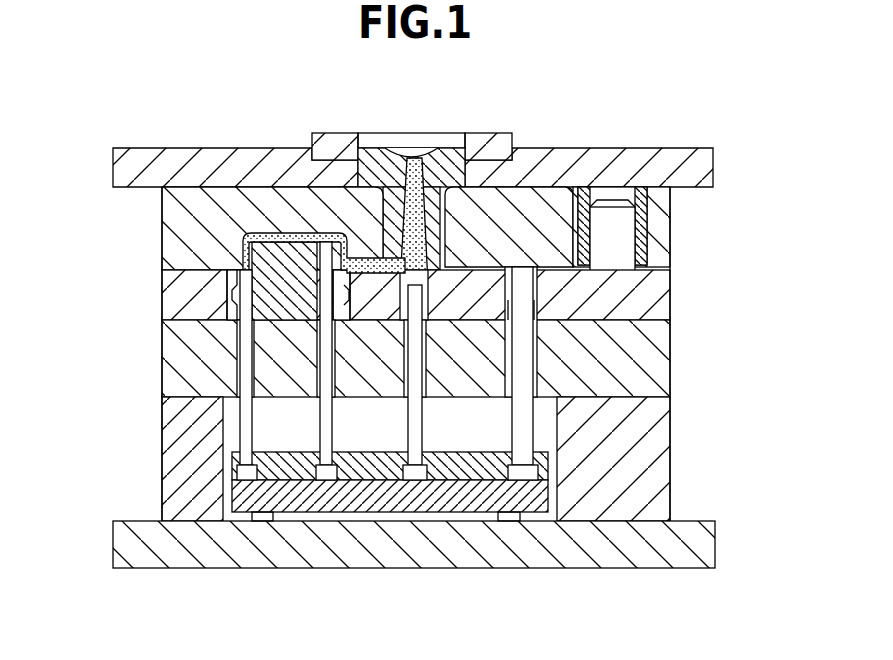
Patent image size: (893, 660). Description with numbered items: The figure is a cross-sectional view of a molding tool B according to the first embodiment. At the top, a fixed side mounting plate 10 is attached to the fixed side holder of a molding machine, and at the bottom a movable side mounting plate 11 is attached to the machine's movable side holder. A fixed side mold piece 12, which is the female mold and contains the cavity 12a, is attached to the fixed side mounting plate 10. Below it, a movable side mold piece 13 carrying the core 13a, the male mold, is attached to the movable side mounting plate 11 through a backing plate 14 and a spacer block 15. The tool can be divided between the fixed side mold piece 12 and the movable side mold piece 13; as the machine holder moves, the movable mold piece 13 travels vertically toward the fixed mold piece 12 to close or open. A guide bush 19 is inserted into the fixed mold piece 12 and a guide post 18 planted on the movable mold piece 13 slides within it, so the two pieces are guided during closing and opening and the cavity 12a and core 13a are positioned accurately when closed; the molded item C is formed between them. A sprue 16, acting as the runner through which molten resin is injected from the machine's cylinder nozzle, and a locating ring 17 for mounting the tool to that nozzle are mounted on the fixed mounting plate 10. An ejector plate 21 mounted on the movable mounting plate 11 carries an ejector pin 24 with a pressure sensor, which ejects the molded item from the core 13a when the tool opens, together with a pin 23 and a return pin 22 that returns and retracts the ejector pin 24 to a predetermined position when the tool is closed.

The fixed side mounting plate 10 is at (714, 158).
The movable side mounting plate 11 is at (703, 547).
The fixed side mold piece 12 is at (190, 198).
The cavity 12a is at (292, 232).
The movable side mold piece 13 is at (168, 278).
The core 13a is at (268, 287).
The backing plate 14 is at (670, 365).
The spacer block 15 is at (650, 485).
The sprue 16 is at (443, 157).
The locating ring 17 is at (508, 133).
The guide post 18 is at (622, 230).
The guide bush 19 is at (642, 247).
The ejector plate 21 is at (428, 497).
The return pin 22 is at (522, 432).
The sprue puller pin 23 is at (420, 428).
The ejector pin 24 is at (243, 363).
The molding tool B is at (658, 128).
The molded product C is at (243, 233).